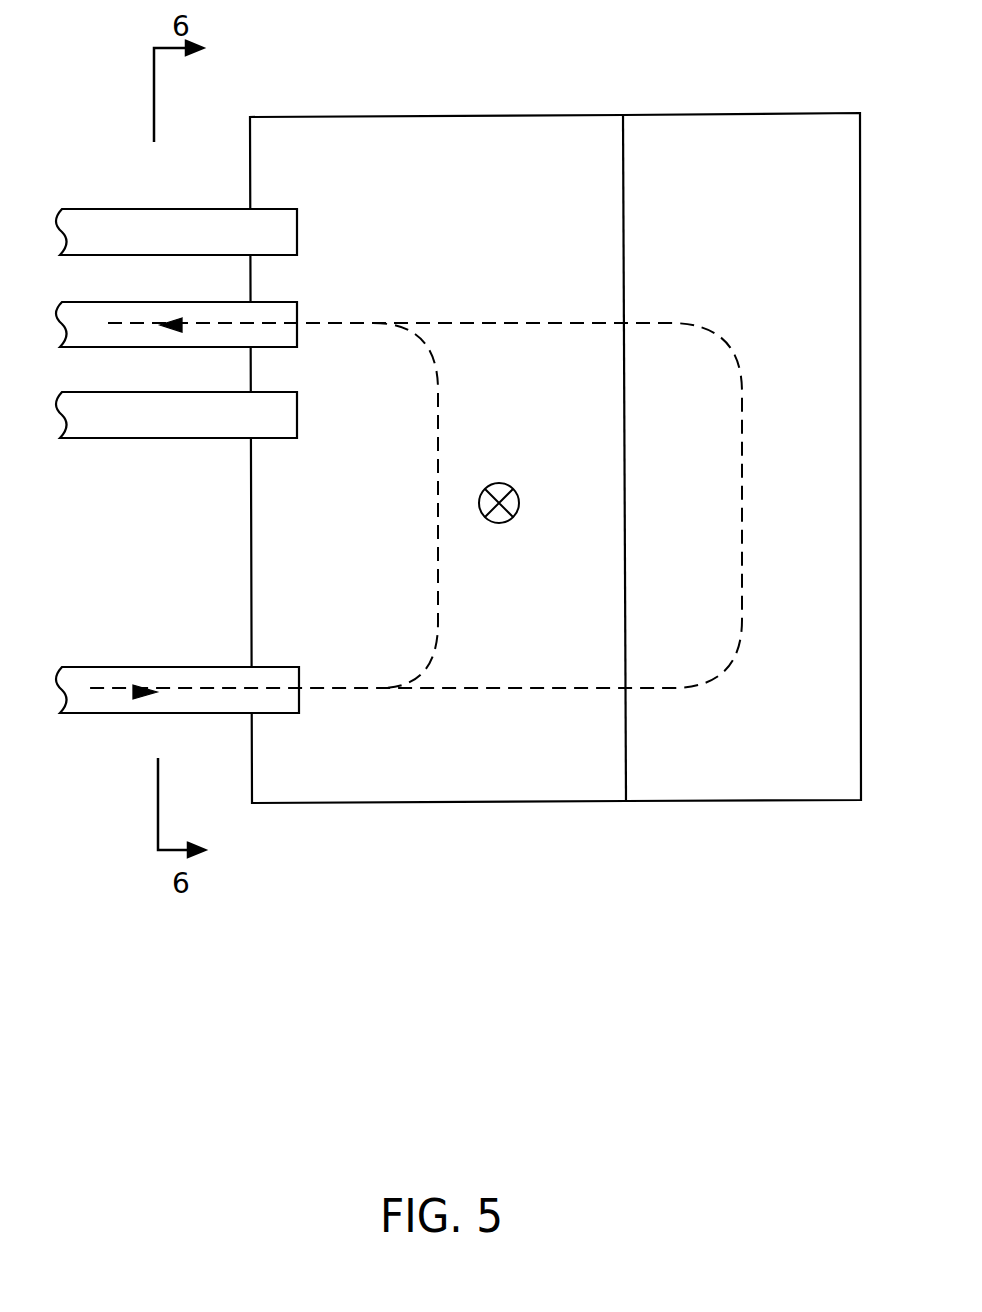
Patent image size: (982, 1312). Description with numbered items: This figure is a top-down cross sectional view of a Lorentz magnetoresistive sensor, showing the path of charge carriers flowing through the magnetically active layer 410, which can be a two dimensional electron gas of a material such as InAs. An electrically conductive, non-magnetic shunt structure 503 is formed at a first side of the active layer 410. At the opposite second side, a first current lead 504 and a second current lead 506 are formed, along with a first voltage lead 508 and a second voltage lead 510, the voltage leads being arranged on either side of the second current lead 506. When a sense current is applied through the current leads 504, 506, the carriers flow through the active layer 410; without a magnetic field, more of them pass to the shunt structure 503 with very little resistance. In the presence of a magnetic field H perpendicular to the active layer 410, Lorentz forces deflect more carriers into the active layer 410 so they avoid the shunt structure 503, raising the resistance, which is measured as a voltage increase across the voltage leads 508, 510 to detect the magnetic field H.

The magnetically active layer 410 is at (495, 226).
The shunt structure 503 is at (784, 228).
The first current lead I1 504 is at (148, 715).
The second current lead I2 506 is at (160, 350).
The first voltage lead V1 508 is at (169, 440).
The second voltage lead V2 510 is at (153, 257).
The magnetic field H is at (497, 483).